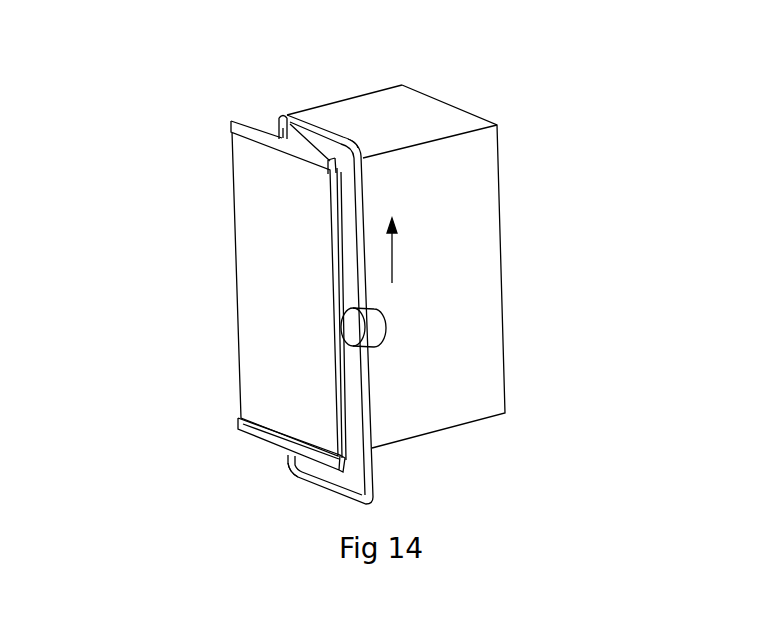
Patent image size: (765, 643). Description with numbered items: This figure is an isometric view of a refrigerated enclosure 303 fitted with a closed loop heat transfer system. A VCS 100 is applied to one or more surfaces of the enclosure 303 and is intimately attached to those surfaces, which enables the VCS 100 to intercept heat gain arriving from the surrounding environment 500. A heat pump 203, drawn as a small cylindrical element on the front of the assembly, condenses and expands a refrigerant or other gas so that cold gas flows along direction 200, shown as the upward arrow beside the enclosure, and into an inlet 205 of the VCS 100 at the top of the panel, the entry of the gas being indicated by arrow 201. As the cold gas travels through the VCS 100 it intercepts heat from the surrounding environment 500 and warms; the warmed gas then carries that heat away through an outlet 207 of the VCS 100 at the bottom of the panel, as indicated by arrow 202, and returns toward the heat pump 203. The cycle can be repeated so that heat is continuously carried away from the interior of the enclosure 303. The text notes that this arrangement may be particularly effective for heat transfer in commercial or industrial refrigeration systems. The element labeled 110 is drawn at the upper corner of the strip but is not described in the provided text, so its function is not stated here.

The surrounding environment 500 is at (128, 126).
The enclosure 303 is at (473, 205).
The VCS 100 is at (230, 272).
The arrow 201 is at (270, 122).
The inlet 205 is at (283, 137).
The bracket corner 110 is at (360, 145).
The heat pump 203 is at (376, 324).
The direction 200 is at (415, 250).
The arrow 202 is at (301, 498).
The outlet 207 is at (288, 456).